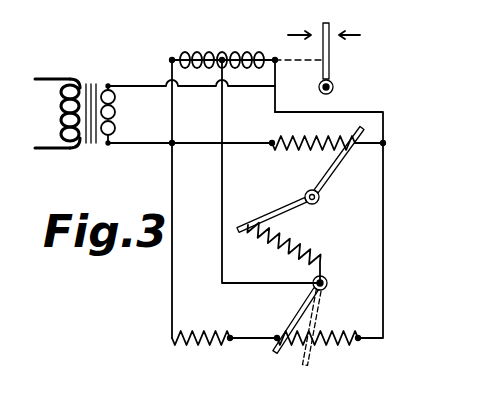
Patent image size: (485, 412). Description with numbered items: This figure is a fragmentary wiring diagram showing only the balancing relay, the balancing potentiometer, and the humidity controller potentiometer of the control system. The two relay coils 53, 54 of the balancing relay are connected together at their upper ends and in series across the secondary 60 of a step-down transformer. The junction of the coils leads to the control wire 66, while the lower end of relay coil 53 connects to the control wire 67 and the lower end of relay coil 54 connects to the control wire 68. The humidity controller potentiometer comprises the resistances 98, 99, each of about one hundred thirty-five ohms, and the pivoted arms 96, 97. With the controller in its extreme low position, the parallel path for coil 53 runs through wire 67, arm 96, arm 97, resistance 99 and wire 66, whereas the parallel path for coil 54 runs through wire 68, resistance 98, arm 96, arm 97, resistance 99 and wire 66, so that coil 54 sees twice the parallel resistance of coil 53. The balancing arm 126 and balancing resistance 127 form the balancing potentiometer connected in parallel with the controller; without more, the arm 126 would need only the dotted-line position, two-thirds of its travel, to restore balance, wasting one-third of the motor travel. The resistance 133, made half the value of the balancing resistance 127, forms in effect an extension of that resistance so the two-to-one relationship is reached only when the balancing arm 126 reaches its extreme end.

The secondary 60 is at (114, 121).
The relay coil 54 is at (210, 66).
The relay coil 53 is at (263, 66).
The control wire 66 is at (271, 171).
The control wire 67 is at (310, 112).
The control wire 68 is at (172, 181).
The resistance 98 is at (308, 150).
The arm 96 is at (330, 175).
The arm 97 is at (279, 208).
The resistance 99 is at (290, 238).
The balancing arm 126 is at (300, 310).
The balancing resistance 127 is at (322, 334).
The resistance 133 is at (210, 334).